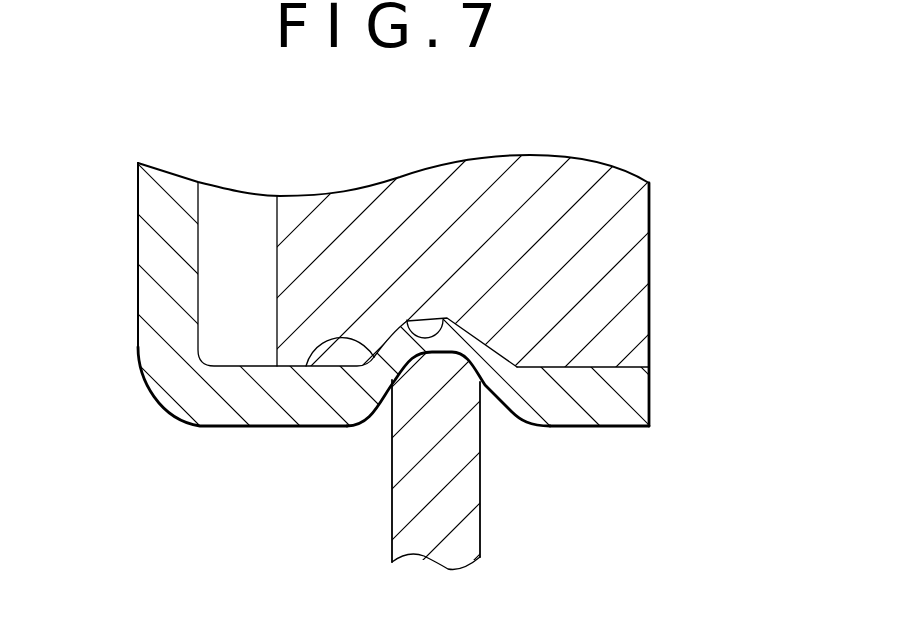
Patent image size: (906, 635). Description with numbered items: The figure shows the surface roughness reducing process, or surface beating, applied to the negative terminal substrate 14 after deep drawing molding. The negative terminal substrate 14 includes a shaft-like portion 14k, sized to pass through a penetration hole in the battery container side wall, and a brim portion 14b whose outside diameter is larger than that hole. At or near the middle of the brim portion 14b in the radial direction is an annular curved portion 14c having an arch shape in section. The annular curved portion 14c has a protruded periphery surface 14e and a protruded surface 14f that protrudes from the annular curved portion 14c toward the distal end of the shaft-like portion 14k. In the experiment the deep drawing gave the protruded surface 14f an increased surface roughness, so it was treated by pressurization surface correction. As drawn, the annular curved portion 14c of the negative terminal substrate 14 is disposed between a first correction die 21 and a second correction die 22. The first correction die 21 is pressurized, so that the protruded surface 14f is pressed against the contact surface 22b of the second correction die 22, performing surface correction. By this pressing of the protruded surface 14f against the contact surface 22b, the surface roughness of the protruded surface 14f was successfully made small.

The negative terminal substrate 14 is at (148, 279).
The brim portion 14b is at (576, 413).
The annular curved portion 14c is at (447, 338).
The protruded periphery surface 14e is at (311, 362).
The protruded surface 14f is at (467, 283).
The shaft-like portion 14k is at (158, 209).
The first correction die 21 is at (408, 507).
The second correction die 22 is at (633, 218).
The contact surface 22b is at (408, 320).